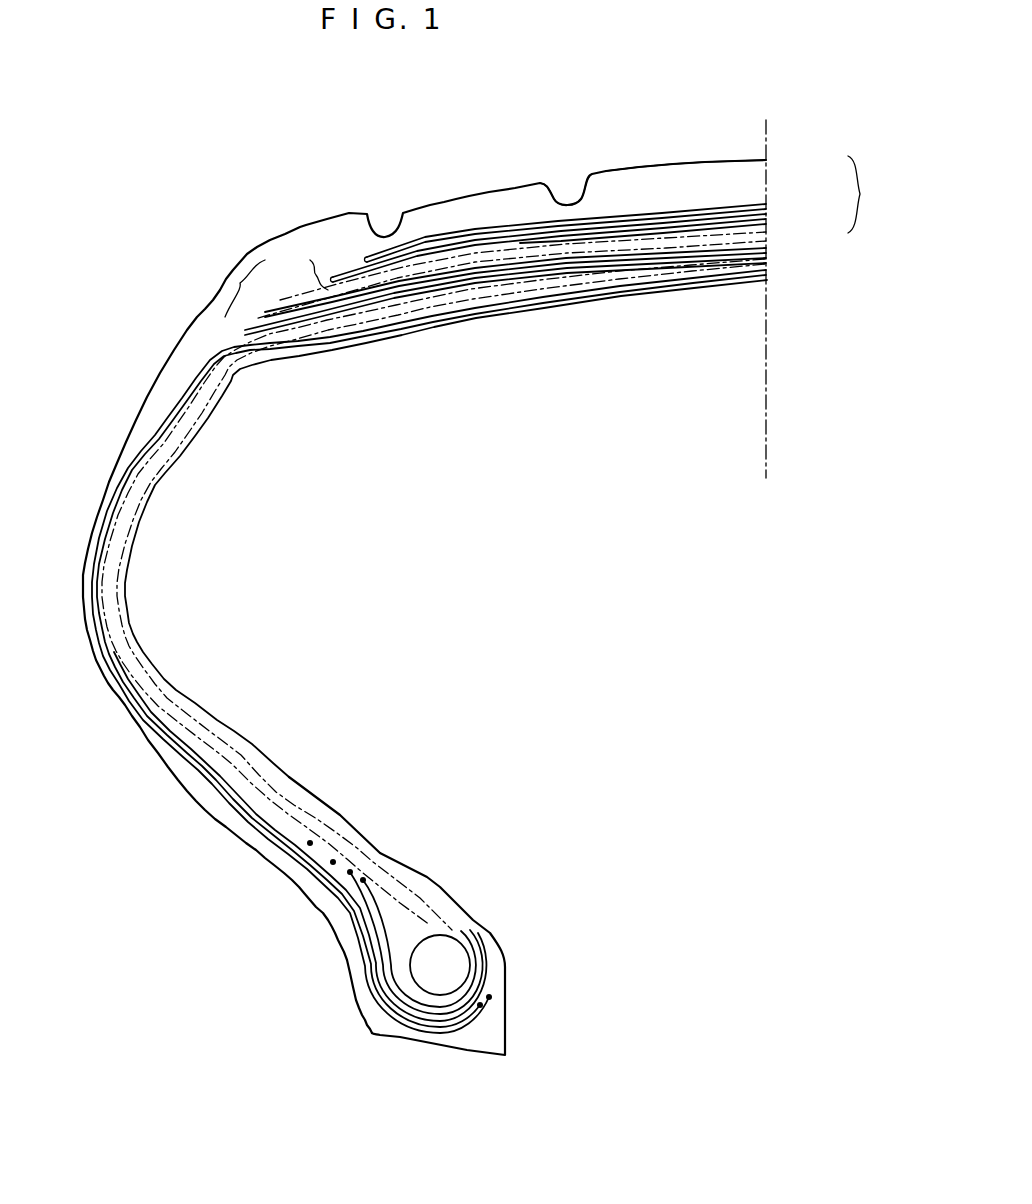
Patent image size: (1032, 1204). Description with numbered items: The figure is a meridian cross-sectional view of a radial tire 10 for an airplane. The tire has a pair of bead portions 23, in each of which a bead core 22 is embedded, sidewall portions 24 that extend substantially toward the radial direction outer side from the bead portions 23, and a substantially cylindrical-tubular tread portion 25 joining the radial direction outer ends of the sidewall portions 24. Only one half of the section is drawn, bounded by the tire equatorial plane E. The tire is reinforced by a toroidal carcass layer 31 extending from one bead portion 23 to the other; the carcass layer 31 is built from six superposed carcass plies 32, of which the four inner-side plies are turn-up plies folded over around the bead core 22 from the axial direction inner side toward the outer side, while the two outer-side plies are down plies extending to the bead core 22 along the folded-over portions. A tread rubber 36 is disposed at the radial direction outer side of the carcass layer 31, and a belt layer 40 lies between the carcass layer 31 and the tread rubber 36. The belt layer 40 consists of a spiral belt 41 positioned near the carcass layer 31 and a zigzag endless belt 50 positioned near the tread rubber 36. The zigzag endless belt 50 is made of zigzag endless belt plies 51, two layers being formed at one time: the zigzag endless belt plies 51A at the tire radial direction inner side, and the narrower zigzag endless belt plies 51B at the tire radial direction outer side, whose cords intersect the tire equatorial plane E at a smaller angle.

The radial tire for an airplane 10 is at (187, 334).
The bead core 22 is at (458, 960).
The bead portion 23 is at (442, 892).
The sidewall portion 24 is at (85, 548).
The tread portion 25 is at (525, 184).
The carcass layer 31 is at (226, 388).
The carcass ply 32 is at (737, 266).
The tread rubber 36 is at (631, 177).
The belt layer 40 is at (240, 283).
The spiral belt 41 is at (268, 312).
The zigzag endless belt 50 is at (298, 275).
The zigzag endless belt ply 51 is at (869, 194).
The zigzag endless belt plies at the tire radial direction inner side 51A is at (740, 229).
The zigzag endless belt plies at the tire radial direction outer side 51B is at (740, 206).
The tire equatorial plane E is at (762, 427).